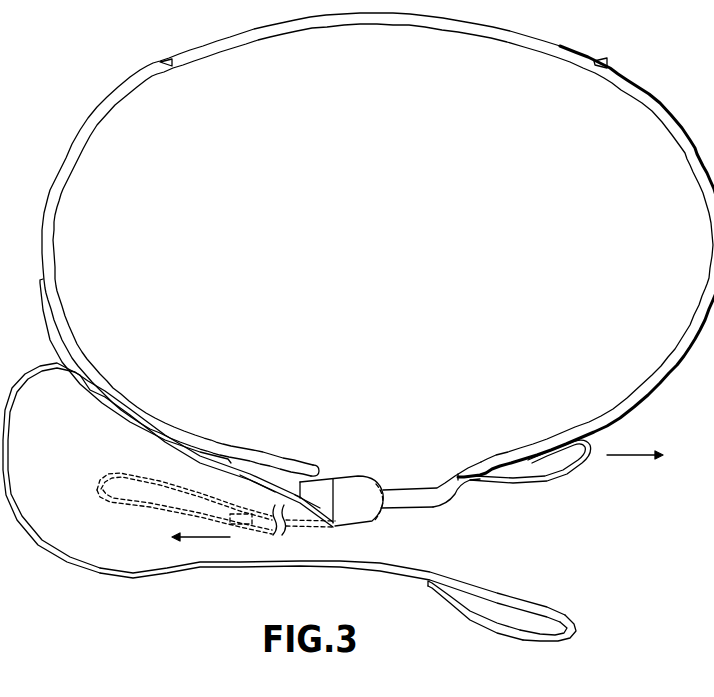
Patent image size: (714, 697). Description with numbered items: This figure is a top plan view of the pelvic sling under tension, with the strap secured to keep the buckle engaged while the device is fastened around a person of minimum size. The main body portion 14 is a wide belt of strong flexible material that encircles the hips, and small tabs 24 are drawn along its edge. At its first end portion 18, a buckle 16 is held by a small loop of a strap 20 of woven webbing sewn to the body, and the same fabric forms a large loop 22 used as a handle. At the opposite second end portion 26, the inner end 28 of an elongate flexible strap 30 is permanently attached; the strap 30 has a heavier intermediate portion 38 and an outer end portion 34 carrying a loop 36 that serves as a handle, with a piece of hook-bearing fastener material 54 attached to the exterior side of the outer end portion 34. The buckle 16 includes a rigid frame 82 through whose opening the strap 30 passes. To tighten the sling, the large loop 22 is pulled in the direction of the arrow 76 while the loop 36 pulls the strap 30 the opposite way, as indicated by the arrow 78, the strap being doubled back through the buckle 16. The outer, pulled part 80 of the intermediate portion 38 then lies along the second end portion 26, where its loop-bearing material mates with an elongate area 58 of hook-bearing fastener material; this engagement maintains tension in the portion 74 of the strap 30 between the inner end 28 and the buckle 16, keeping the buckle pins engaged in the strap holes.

The main body portion 14 is at (658, 101).
The buckle 16 is at (398, 488).
The first end portion 18 is at (457, 470).
The strap 20 is at (446, 507).
The large loop 22 is at (567, 484).
The tabs 24 is at (167, 59).
The second end portion 26 is at (281, 460).
The inner end 28 is at (306, 516).
The elongate flexible strap 30 is at (10, 440).
The outer end portion 34 is at (496, 588).
The loop 36 is at (97, 490).
The intermediate portion 38 is at (100, 582).
The hook-bearing fastener material 54 is at (526, 642).
The area of hook-bearing fastener material 58 is at (56, 334).
The portion of the strap 74 is at (331, 476).
The arrow 76 is at (627, 460).
The arrow 78 is at (197, 538).
The outer part of the intermediate portion 80 is at (256, 493).
The rigid frame 82 is at (356, 516).